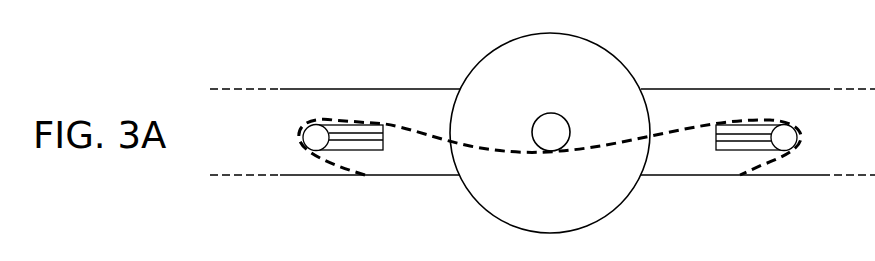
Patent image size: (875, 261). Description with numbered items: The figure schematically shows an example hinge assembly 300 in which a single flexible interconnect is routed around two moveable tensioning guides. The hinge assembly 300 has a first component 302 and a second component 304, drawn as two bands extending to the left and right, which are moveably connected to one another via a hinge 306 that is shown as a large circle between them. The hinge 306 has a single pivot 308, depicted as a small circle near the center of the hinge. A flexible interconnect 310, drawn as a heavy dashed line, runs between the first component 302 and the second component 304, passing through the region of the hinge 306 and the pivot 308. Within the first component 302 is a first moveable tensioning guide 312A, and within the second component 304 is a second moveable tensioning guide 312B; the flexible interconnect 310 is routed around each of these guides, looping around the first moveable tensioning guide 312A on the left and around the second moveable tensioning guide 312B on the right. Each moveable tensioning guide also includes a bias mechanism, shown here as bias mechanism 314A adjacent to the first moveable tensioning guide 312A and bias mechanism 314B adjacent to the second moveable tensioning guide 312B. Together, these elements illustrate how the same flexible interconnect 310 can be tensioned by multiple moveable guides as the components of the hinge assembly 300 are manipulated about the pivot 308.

The hinge assembly 300 is at (186, 44).
The first component 302 is at (372, 88).
The second component 304 is at (735, 88).
The hinge 306 is at (503, 42).
The pivot 308 is at (555, 114).
The flexible interconnect 310 is at (662, 130).
The first moveable tensioning guide 312A is at (306, 127).
The second moveable tensioning guide 312B is at (797, 130).
The bias mechanism 314A is at (357, 141).
The bias mechanism 314B is at (737, 142).